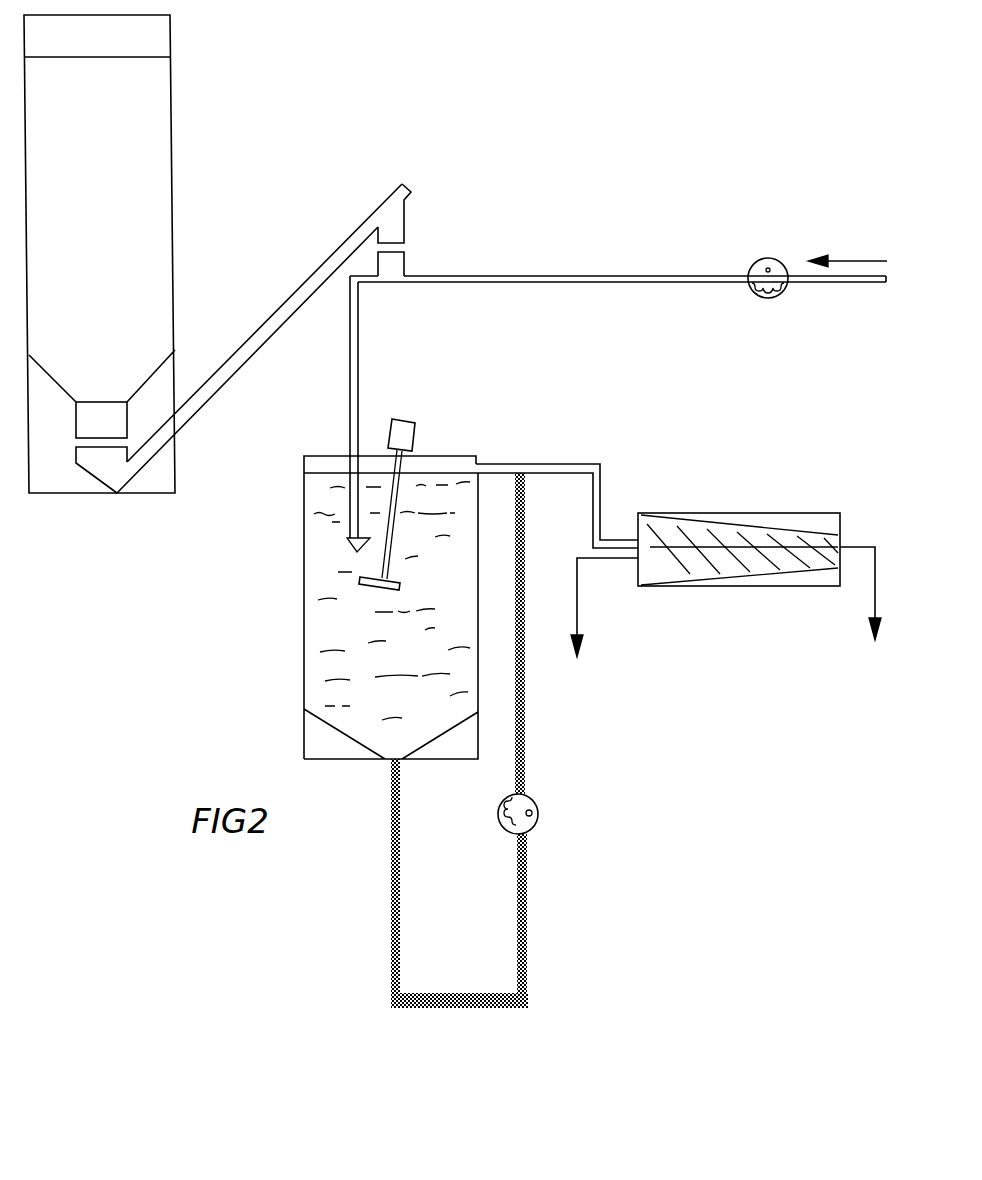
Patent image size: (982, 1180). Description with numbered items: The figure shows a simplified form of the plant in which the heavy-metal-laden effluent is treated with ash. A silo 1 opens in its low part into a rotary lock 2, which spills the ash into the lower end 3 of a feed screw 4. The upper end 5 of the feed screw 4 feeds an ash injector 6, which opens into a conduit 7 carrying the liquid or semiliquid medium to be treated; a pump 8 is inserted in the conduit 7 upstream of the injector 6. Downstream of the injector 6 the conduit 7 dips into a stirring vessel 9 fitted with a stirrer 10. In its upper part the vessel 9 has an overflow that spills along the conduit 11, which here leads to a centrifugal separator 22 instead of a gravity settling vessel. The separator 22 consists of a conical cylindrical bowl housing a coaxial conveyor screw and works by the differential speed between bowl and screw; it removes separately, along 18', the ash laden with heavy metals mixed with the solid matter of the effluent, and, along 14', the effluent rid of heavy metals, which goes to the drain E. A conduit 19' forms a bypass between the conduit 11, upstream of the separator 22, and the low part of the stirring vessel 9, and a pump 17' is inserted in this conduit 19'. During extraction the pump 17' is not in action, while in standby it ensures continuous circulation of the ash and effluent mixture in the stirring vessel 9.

The silo 1 is at (171, 182).
The rotary lock 2 is at (83, 424).
The lower end of the feed screw 3 is at (103, 475).
The feed screw 4 is at (225, 392).
The upper end of the feed screw 5 is at (390, 225).
The ash injector 6 is at (390, 262).
The conduit 7 is at (665, 275).
The pump 8 is at (770, 286).
The stirring vessel 9 is at (303, 562).
The stirrer 10 is at (407, 419).
The overflow conduit 11 is at (550, 463).
The centrifugal separator 22 is at (780, 513).
The effluent outlet conduit 14' is at (620, 630).
The ash outlet conduit 18' is at (827, 604).
The bypass conduit 19' is at (451, 740).
The pump 17' is at (486, 834).